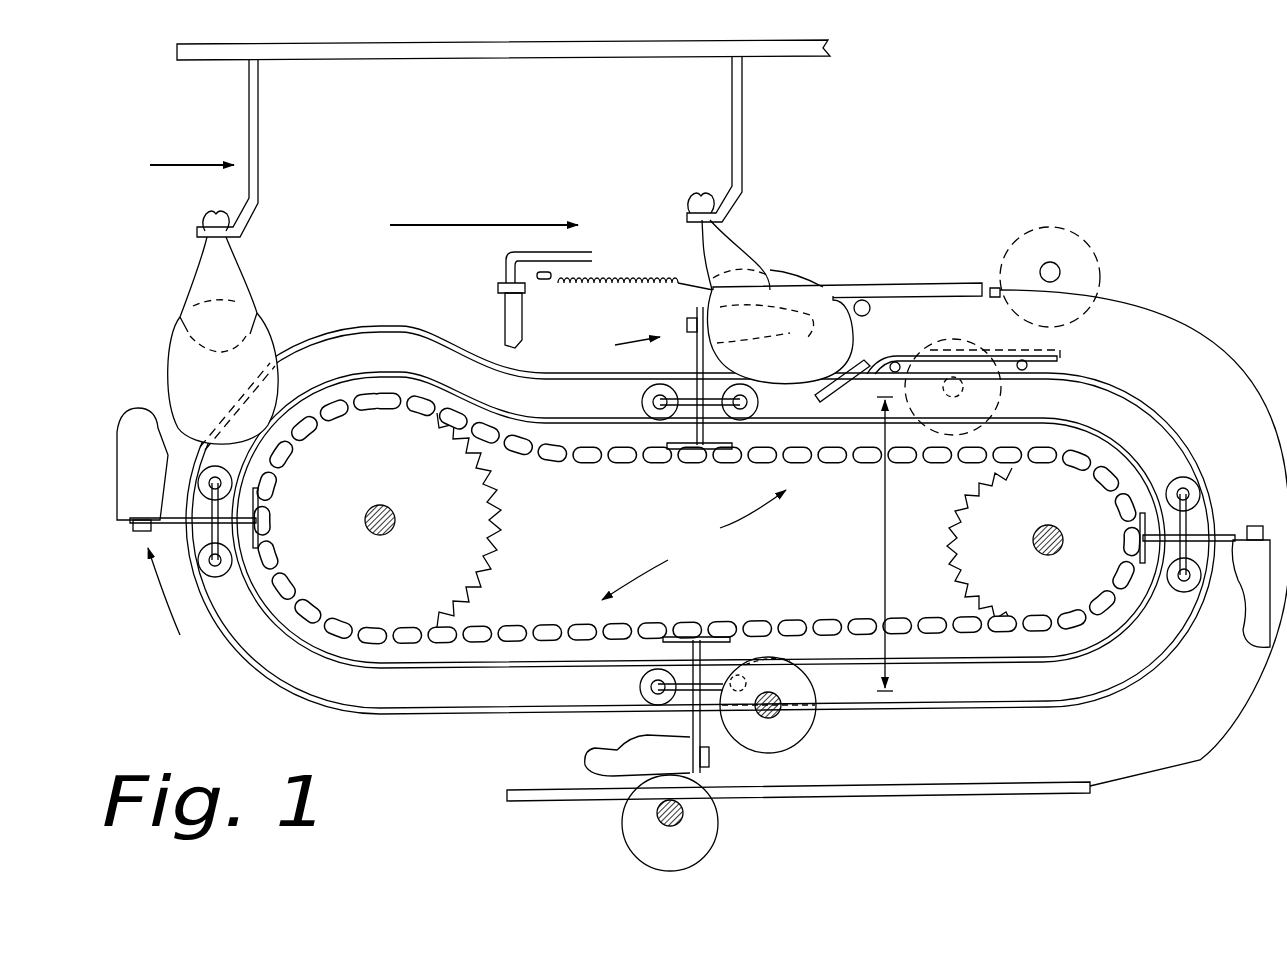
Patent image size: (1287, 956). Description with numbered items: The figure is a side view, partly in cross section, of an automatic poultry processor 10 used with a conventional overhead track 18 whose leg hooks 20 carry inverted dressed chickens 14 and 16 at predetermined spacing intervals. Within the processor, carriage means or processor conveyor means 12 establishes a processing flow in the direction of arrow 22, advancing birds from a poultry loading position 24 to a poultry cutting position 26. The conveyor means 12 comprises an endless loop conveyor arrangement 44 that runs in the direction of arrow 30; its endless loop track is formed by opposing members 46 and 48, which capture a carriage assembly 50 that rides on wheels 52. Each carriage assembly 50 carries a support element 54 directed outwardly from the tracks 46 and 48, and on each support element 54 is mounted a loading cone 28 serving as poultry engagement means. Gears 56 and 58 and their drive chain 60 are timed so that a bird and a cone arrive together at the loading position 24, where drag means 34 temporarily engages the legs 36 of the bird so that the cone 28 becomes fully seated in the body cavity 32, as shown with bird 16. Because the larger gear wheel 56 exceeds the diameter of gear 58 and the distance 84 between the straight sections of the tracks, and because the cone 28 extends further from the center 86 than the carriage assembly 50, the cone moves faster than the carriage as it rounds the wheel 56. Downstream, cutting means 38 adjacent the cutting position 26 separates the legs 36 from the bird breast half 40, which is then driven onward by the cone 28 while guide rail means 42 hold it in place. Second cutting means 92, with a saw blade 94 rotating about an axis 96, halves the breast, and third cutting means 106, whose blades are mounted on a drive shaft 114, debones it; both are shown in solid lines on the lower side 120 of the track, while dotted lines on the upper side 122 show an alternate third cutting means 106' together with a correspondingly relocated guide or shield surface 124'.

The poultry processor 10 is at (952, 158).
The processor conveyor means 12 is at (694, 545).
The chicken 14 is at (262, 325).
The chicken 16 is at (778, 268).
The overhead track 18 is at (520, 65).
The leg hooks 20 is at (258, 152).
The processing flow arrow 22 is at (432, 225).
The poultry loading position 24 is at (482, 316).
The poultry cutting position 26 is at (856, 274).
The loading cone 28 is at (128, 428).
The conveyor direction arrow 30 is at (168, 630).
The body cavity 32 is at (172, 338).
The drag means 34 is at (585, 252).
The legs 36 is at (735, 236).
The cutting means 38 is at (885, 284).
The bird breast half 40 is at (770, 364).
The guide rail means 42 is at (1196, 336).
The endless loop conveyor arrangement 44 is at (502, 718).
The track member 46 is at (305, 698).
The track member 48 is at (388, 672).
The carriage assembly 50 is at (218, 590).
The wheels 52 is at (200, 586).
The support element 54 is at (205, 533).
The gear wheel 56 is at (440, 568).
The gear 58 is at (1016, 556).
The drive chain 60 is at (640, 467).
The track section distance 84 is at (883, 544).
The gear wheel center 86 is at (392, 510).
The second cutting means 92 is at (1000, 385).
The saw blade 94 is at (815, 722).
The axis 96 is at (775, 698).
The third cutting means 106 is at (798, 823).
The alternate third cutting means 106' is at (1091, 277).
The drive shaft 114 is at (684, 816).
The lower side 120 is at (515, 755).
The upper side 122 is at (912, 333).
The guide or shield surface 124' is at (1033, 342).